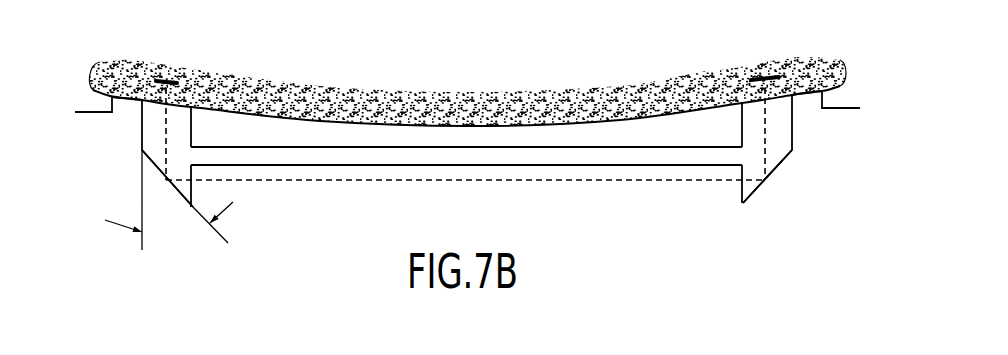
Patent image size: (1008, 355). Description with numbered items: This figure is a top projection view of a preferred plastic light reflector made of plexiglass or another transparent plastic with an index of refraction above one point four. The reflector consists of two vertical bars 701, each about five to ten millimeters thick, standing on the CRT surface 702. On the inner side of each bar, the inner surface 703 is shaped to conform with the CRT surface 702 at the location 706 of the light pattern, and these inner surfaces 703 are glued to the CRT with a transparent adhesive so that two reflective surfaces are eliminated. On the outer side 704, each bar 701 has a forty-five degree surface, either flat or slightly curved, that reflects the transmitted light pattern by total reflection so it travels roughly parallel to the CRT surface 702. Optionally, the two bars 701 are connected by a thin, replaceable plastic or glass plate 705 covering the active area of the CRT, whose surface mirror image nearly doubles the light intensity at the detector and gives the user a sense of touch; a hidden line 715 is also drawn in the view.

The vertical bar 701 is at (150, 147).
The CRT surface 702 is at (527, 83).
The inner surface 703 is at (153, 83).
The outer side 704 is at (166, 180).
The plastic or glass plate 705 is at (457, 165).
The location of the light pattern 706 is at (170, 64).
The hidden channel line 715 is at (547, 182).